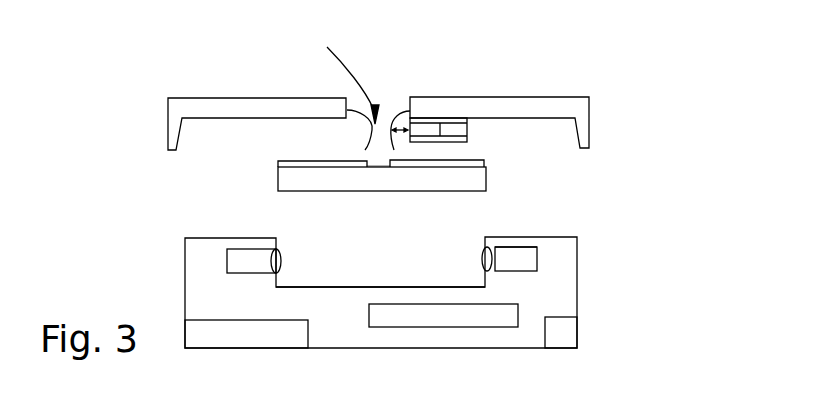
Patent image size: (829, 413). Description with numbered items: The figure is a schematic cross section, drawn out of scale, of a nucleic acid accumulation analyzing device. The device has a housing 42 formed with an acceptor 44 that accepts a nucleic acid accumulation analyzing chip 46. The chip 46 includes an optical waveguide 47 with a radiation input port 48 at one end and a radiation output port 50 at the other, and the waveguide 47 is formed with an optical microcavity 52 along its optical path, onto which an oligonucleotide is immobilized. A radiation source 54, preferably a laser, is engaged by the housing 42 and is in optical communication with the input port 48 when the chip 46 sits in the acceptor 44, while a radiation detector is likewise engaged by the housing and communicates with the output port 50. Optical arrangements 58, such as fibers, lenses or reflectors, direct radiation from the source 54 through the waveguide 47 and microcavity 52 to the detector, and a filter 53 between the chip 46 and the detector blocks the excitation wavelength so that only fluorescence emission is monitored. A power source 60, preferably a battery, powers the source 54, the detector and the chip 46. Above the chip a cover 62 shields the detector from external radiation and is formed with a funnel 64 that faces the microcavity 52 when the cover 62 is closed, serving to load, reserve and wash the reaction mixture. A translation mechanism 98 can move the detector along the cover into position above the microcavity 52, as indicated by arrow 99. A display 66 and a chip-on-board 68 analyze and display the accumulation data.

The housing 42 is at (570, 288).
The acceptor 44 is at (387, 253).
The nucleic acid accumulation analyzing chip 46 is at (278, 180).
The optical waveguide 47 is at (462, 158).
The radiation input port 48 is at (278, 164).
The radiation output port 50 is at (381, 159).
The optical microcavity 52 is at (382, 160).
The filter 53 is at (508, 255).
The radiation source 54 is at (260, 256).
The optical arrangements 58 is at (280, 257).
The power source 60 is at (228, 338).
The cover 62 is at (583, 105).
The funnel 64 is at (402, 108).
The display 66 is at (413, 322).
The chip-on-board 68 is at (560, 337).
The translation mechanism 98 is at (463, 120).
The arrow 99 is at (393, 148).